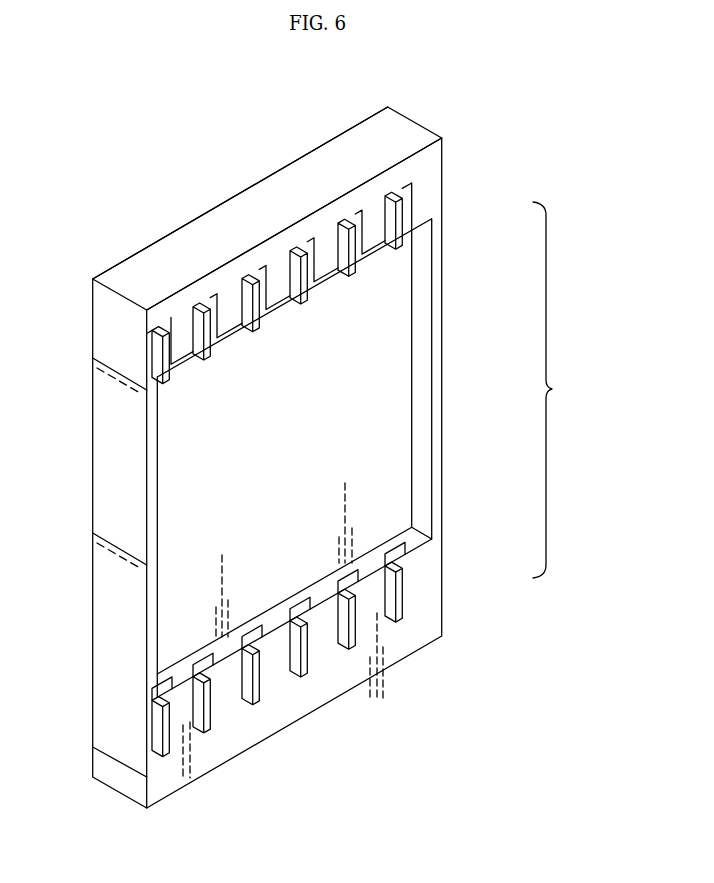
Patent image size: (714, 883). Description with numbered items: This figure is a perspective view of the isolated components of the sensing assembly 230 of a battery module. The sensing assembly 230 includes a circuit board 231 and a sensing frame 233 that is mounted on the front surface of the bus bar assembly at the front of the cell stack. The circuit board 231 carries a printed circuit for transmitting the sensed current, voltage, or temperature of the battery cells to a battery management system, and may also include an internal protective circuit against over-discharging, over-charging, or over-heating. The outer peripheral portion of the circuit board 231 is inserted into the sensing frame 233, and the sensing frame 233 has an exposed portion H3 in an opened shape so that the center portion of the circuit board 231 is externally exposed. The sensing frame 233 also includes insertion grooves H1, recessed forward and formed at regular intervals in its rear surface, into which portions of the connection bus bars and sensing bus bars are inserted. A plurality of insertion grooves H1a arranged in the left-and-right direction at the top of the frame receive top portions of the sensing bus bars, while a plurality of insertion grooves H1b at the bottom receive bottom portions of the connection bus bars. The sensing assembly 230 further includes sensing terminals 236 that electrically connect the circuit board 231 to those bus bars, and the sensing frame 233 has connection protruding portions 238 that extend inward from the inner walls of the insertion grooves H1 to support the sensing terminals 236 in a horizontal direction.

The sensing assembly 230 is at (99, 150).
The circuit board 231 is at (378, 385).
The sensing frame 233 is at (264, 202).
The sensing terminal 236 is at (305, 247).
The connection protruding portion 238 is at (202, 308).
The insertion groove H1 is at (556, 390).
The insertion groove H1a is at (330, 255).
The insertion groove H1b is at (330, 605).
The exposed portion H3 is at (275, 468).